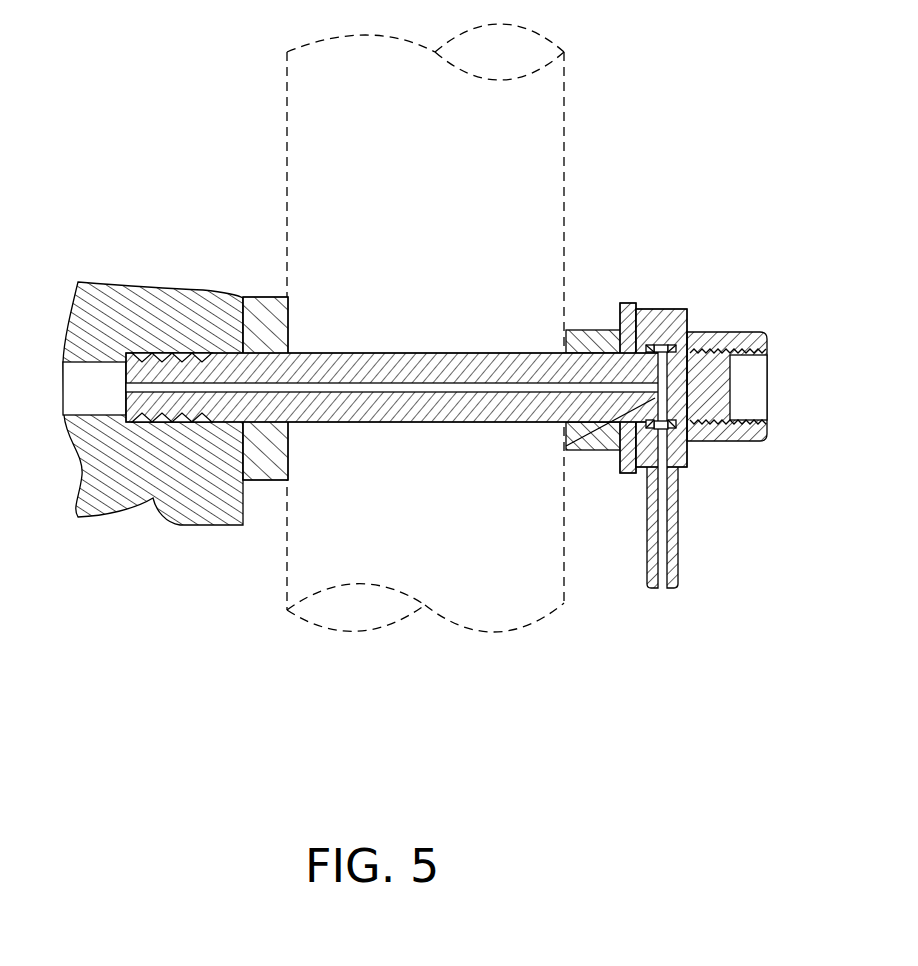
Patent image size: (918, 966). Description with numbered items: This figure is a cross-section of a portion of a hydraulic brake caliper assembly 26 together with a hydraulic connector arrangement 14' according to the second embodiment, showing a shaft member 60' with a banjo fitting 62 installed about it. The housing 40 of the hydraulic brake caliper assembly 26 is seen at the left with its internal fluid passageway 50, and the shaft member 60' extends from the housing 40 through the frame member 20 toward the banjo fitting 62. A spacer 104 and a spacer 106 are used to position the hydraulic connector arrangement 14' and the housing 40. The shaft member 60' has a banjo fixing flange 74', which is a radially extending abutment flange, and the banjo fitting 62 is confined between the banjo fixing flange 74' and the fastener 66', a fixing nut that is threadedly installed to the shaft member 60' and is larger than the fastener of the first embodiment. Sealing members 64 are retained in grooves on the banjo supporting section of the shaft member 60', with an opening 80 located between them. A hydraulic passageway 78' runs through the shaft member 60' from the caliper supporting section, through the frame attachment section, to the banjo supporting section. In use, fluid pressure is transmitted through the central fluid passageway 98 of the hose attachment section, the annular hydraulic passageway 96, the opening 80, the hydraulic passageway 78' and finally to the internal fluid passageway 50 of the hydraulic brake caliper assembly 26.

The frame member 20 is at (527, 126).
The hydraulic brake caliper assembly 26 is at (153, 375).
The housing 40 is at (155, 293).
The internal fluid passageway 50 is at (78, 382).
The spacer 104 is at (262, 297).
The hydraulic connector arrangement 14' is at (373, 277).
The shaft member 60' is at (393, 399).
The hydraulic passageway 78' is at (393, 439).
The spacer 106 is at (592, 330).
The banjo fixing flange 74' is at (632, 335).
The banjo fitting 62 is at (655, 318).
The annular hydraulic passageway 96 is at (662, 346).
The fastener 66' is at (729, 364).
The central fluid passageway 98 is at (660, 573).
The sealing members 64 is at (651, 428).
The opening 80 is at (566, 448).